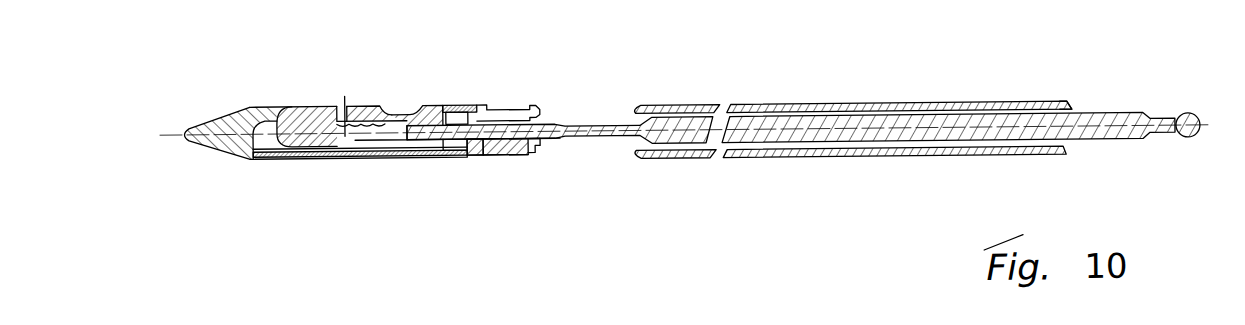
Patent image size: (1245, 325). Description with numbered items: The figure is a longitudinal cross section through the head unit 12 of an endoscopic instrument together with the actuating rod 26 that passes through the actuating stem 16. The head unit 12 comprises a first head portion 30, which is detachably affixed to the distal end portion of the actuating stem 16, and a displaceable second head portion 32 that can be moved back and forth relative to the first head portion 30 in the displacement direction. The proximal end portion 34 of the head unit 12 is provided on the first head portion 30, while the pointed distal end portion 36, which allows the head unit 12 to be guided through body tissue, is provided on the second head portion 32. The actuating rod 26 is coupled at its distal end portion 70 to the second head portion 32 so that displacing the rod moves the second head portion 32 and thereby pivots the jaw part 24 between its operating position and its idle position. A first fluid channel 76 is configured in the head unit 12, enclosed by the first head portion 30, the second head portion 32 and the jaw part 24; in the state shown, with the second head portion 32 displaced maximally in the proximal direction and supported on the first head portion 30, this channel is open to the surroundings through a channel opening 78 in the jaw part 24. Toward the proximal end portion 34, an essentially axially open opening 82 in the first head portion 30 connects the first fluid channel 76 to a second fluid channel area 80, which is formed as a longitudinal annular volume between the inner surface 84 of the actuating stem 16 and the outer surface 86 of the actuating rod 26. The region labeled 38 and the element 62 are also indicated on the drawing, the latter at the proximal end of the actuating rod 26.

The head unit 12 is at (188, 68).
The actuating stem 16 is at (970, 116).
The jaw part 24 is at (305, 108).
The actuating rod 26 is at (833, 125).
The first head portion 30 is at (337, 164).
The second head portion 32 is at (421, 109).
The proximal end portion 34 is at (534, 100).
The distal end portion 36 is at (182, 160).
The coupling region 38 is at (525, 181).
The ball end 62 is at (1178, 108).
The distal end portion 70 is at (452, 150).
The first fluid channel 76 is at (380, 152).
The channel opening 78 is at (353, 109).
The second fluid channel area 80 is at (652, 113).
The opening 82 is at (548, 154).
The inner surface 84 is at (1074, 121).
The outer surface 86 is at (885, 160).